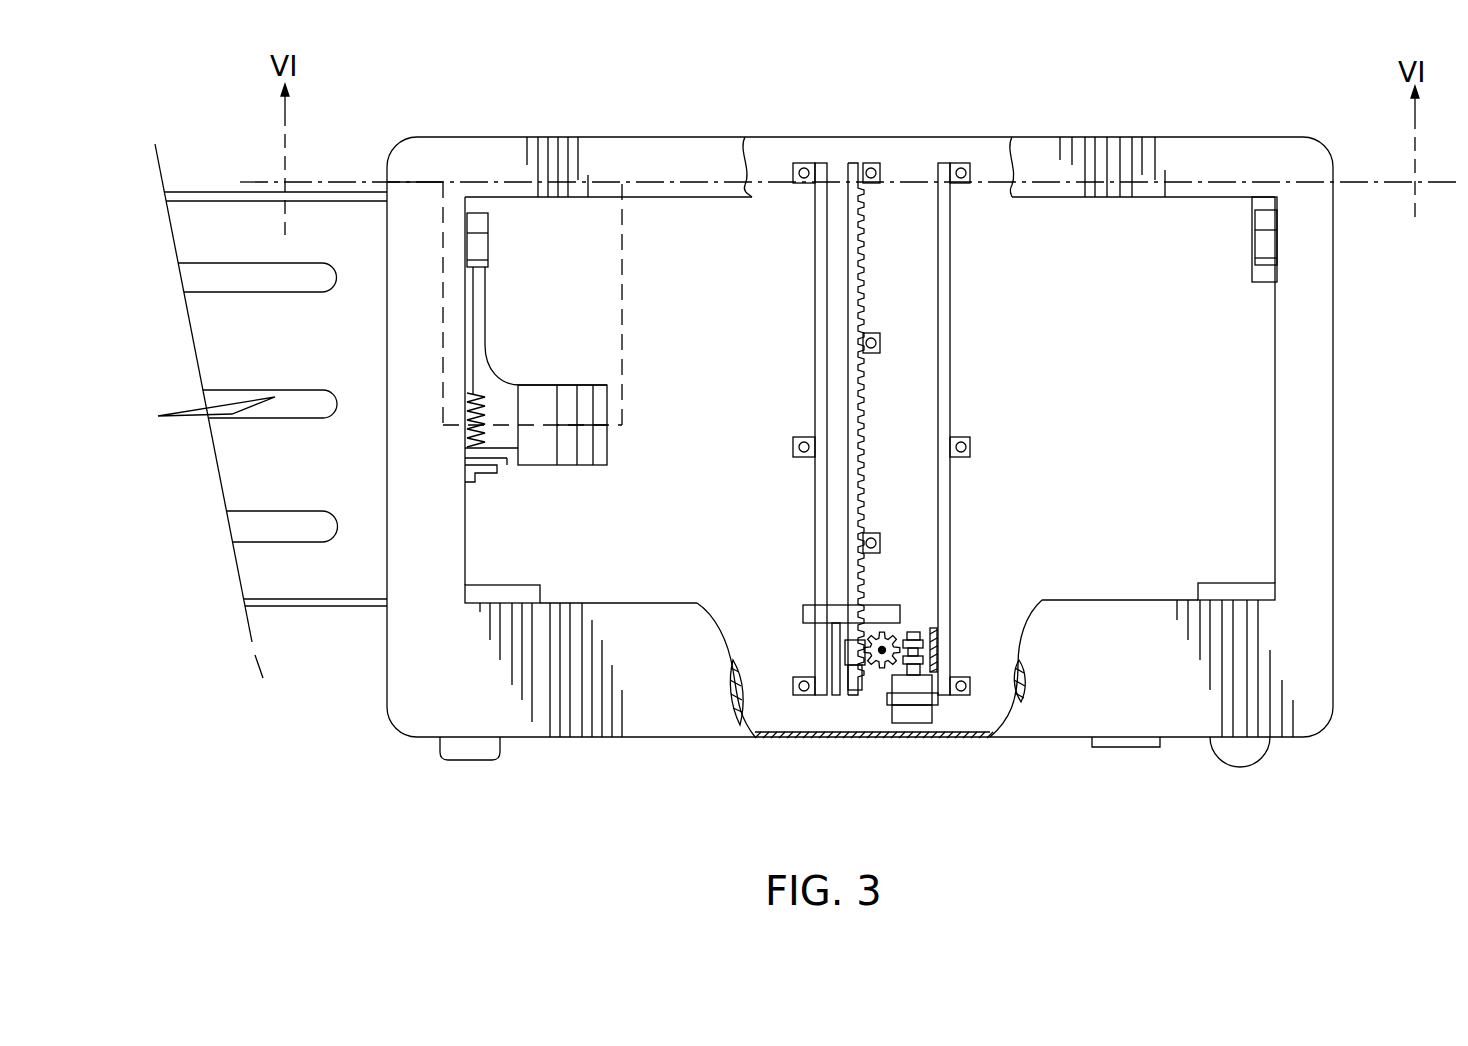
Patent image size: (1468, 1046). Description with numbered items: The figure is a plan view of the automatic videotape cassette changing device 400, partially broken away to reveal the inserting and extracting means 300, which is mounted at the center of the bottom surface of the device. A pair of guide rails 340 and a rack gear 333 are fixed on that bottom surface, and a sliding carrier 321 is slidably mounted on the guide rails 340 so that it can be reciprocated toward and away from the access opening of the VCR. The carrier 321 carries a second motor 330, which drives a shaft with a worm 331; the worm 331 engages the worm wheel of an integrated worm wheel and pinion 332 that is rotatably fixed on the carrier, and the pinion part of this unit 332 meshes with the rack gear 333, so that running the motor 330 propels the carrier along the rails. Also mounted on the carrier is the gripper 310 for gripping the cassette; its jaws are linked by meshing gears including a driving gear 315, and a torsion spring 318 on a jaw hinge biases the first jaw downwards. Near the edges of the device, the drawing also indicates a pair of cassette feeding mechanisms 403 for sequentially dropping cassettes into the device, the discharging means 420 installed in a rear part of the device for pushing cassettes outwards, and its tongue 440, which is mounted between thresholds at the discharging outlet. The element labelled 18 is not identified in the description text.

The main body frame 18 is at (690, 320).
The inserting and extracting means 300 is at (833, 745).
The gripper 310 is at (815, 608).
The driving gear 315 is at (833, 650).
The torsion spring 318 is at (836, 662).
The sliding carrier 321 is at (938, 650).
The second motor 330 is at (905, 712).
The worm 331 is at (912, 632).
The integrated worm wheel and pinion 332 is at (880, 632).
The rack gear 333 is at (866, 372).
The guide rails 340 is at (818, 345).
The automatic videotape cassette changing device 400 is at (350, 620).
The cassette feeding mechanisms 403 is at (477, 238).
The discharging means 420 is at (1245, 272).
The tongue 440 is at (558, 432).